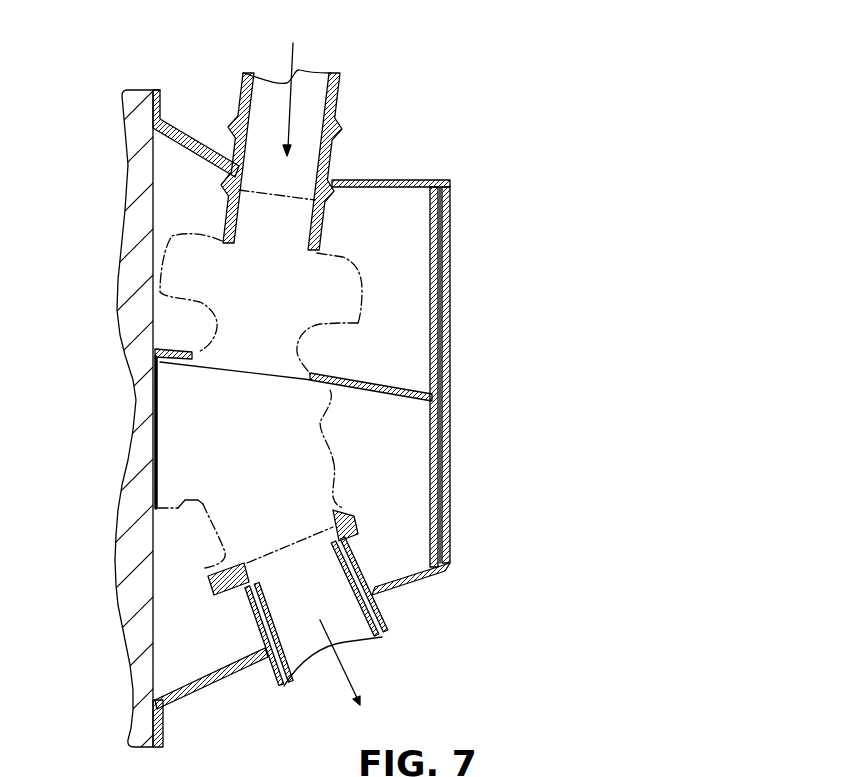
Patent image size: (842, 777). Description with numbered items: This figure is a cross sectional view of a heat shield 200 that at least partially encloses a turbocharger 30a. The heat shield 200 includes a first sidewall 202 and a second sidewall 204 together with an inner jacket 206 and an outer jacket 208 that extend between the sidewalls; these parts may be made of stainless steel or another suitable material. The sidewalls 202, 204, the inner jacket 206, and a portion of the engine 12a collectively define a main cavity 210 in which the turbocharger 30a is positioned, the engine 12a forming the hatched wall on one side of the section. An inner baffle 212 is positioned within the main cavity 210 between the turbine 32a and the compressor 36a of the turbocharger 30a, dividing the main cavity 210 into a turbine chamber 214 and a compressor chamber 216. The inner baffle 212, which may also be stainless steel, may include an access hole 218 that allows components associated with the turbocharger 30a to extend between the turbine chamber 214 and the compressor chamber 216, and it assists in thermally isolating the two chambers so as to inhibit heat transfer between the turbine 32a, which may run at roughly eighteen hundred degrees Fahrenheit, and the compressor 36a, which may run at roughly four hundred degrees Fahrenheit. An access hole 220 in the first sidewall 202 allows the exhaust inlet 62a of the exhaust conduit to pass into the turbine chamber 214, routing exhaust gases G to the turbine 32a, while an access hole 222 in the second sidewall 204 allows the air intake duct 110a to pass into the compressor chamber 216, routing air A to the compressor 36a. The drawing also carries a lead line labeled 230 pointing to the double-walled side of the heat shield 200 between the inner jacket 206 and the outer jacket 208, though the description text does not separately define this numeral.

The engine 12a is at (112, 541).
The access hole 222 is at (238, 170).
The air intake duct 110a is at (338, 87).
The air A is at (297, 53).
The heat shield 200 is at (358, 377).
The second sidewall 204 is at (383, 177).
The outer jacket 208 is at (450, 265).
The gap between side walls 230 is at (438, 298).
The inner jacket 206 is at (433, 339).
The inner baffle 212 is at (370, 383).
The first sidewall 202 is at (403, 588).
The compressor chamber 216 is at (284, 275).
The turbocharger 30a is at (374, 279).
The compressor 36a is at (360, 321).
The access hole 218 is at (198, 352).
The turbine chamber 214 is at (364, 425).
The main cavity 210 is at (416, 444).
The turbine 32a is at (337, 473).
The exhaust inlet 62a is at (312, 599).
The access hole 220 is at (263, 650).
The exhaust gases G is at (347, 685).